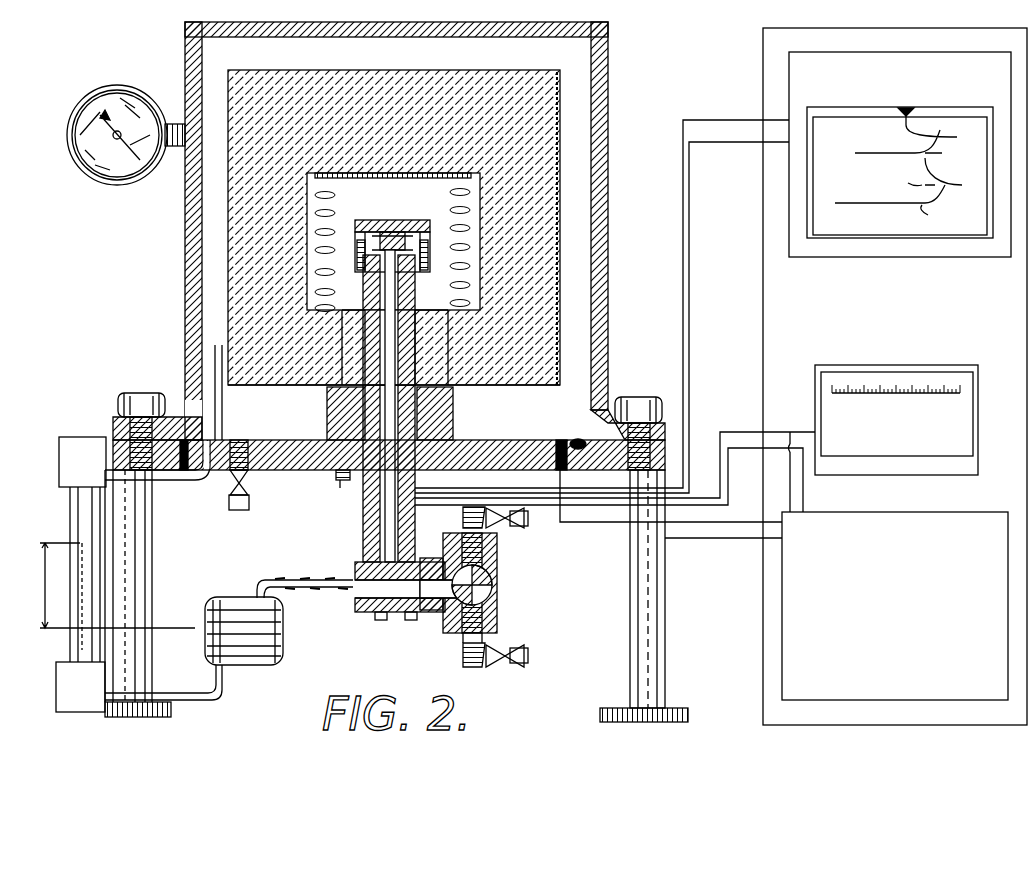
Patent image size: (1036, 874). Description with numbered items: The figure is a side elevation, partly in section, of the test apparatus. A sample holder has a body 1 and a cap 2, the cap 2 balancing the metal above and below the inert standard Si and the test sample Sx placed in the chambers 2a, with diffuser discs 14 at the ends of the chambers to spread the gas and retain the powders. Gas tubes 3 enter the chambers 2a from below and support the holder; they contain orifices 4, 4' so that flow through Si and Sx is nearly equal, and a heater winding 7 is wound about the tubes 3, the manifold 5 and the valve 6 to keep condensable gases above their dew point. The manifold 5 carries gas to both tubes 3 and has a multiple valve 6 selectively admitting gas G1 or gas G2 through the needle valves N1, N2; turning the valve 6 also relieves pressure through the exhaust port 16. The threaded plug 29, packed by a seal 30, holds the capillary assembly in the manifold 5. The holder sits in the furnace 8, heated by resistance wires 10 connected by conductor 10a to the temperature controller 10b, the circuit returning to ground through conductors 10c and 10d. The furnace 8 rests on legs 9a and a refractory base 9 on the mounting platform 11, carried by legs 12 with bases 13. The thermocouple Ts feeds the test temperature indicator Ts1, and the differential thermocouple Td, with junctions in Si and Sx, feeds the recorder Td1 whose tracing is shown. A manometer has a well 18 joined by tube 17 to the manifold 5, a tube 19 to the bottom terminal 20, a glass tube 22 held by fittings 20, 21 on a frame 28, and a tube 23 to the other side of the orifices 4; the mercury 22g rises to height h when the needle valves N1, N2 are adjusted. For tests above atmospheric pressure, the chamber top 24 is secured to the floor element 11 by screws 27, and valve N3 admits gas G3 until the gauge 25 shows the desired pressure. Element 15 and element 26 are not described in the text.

The body 1 is at (383, 272).
The cap 2 is at (372, 228).
The material holding chambers 2a is at (430, 232).
The tubes 3 is at (352, 318).
The orifice 4 is at (346, 408).
The orifice 4' is at (427, 408).
The manifold 5 is at (385, 612).
The multiple valve 6 is at (485, 578).
The resistance-wire winding 7 is at (333, 578).
The furnace 8 is at (285, 100).
The refractory base 9 is at (327, 410).
The legs 9a is at (224, 405).
The electric resistance wires 10 is at (318, 172).
The electrical conductor 10a is at (612, 522).
The temperature controller 10b is at (948, 530).
The conductor 10c is at (722, 538).
The conductor 10d is at (560, 168).
The mounting platform 11 is at (300, 465).
The legs 12 is at (668, 608).
The bases 13 is at (672, 708).
The diffuser discs 14 is at (392, 222).
The fitting 15 is at (342, 480).
The exhaust port 16 is at (487, 580).
The tube 17 is at (302, 588).
The well 18 is at (280, 652).
The tube 19 is at (200, 700).
The fitting 20 is at (80, 688).
The fitting 21 is at (75, 460).
The glass tube 22 is at (82, 510).
The mercury 22g is at (82, 638).
The tube 23 is at (170, 485).
The pressure chamber top 24 is at (185, 272).
The gauge 25 is at (117, 170).
The seal 26 is at (572, 440).
The screws 27 is at (145, 405).
The frame 28 is at (110, 528).
The threaded plug 29 is at (383, 620).
The seal 30 is at (412, 620).
The inert standard sample Si is at (360, 228).
The test sample Sx is at (428, 222).
The differential thermocouple Td is at (362, 240).
The thermocouple Ts is at (408, 275).
The recorder Td1 is at (995, 250).
The test temperature indicator Ts1 is at (912, 364).
The needle valve N1 is at (495, 520).
The gas G1 is at (532, 517).
The needle valve N2 is at (500, 660).
The gas G2 is at (535, 660).
The valve N3 is at (232, 490).
The gas G3 is at (248, 508).
The mercury height h is at (116, 585).